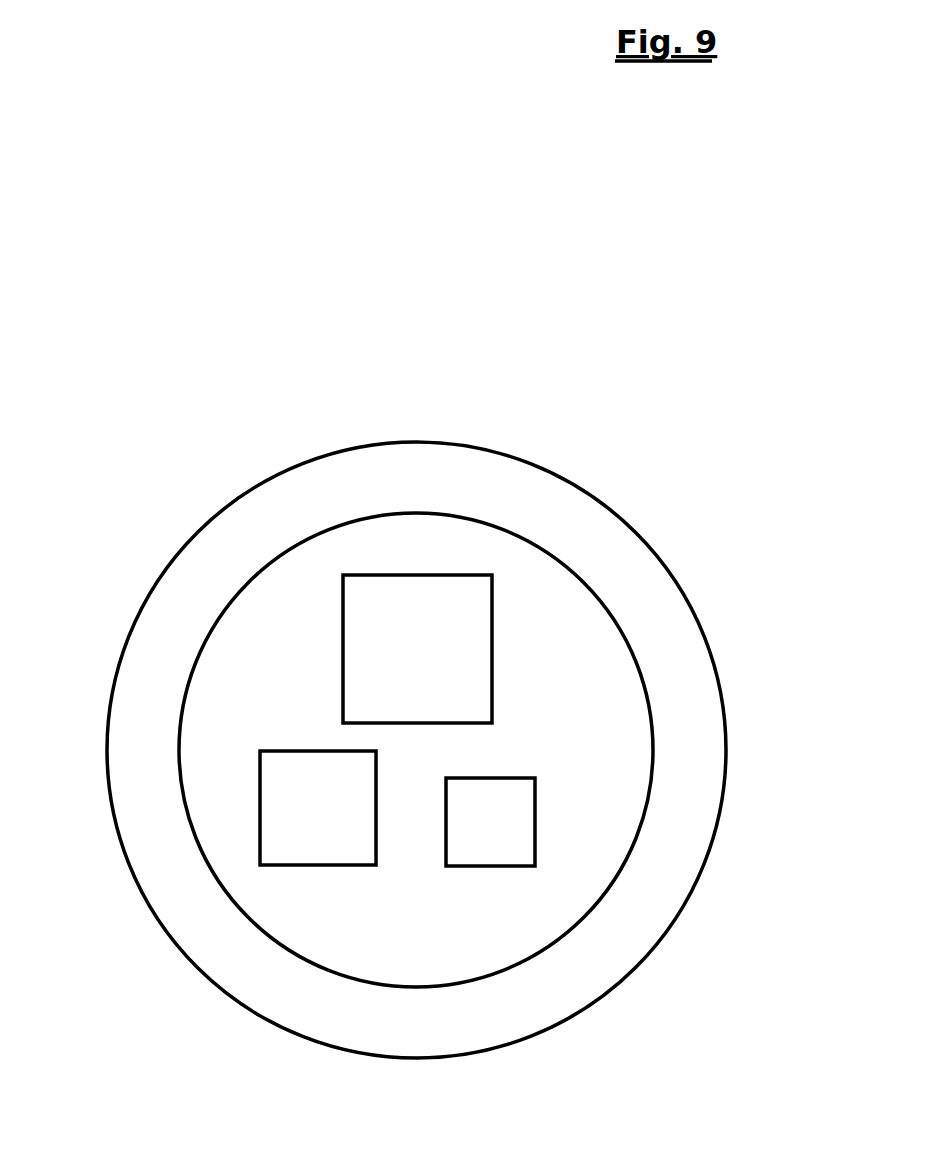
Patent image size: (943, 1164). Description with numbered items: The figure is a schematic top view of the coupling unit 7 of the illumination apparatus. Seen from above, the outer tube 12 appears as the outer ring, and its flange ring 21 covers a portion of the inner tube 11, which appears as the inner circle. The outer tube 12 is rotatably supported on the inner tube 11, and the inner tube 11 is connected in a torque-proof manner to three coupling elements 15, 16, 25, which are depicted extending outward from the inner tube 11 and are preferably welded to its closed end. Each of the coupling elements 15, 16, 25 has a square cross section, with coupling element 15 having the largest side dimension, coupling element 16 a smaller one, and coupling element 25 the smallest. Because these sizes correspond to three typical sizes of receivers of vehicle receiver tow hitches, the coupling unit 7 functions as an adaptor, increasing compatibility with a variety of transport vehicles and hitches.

The coupling unit 7 is at (585, 522).
The flange ring 21 is at (648, 582).
The outer tube 12 is at (682, 648).
The inner tube 11 is at (603, 753).
The coupling element 15 is at (413, 618).
The coupling element 16 is at (283, 820).
The coupling element 25 is at (509, 820).